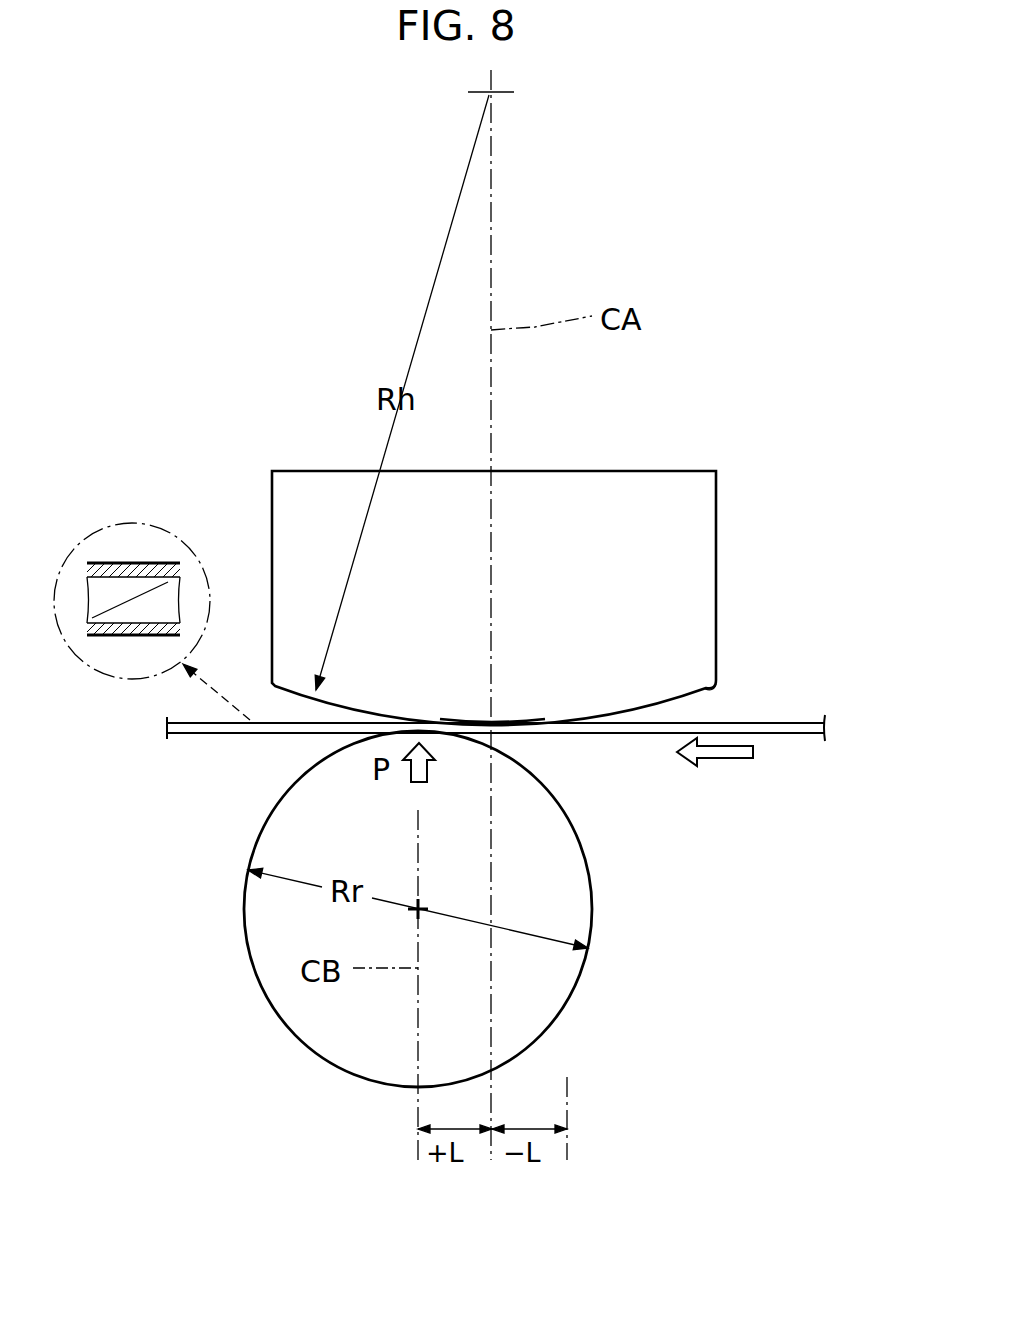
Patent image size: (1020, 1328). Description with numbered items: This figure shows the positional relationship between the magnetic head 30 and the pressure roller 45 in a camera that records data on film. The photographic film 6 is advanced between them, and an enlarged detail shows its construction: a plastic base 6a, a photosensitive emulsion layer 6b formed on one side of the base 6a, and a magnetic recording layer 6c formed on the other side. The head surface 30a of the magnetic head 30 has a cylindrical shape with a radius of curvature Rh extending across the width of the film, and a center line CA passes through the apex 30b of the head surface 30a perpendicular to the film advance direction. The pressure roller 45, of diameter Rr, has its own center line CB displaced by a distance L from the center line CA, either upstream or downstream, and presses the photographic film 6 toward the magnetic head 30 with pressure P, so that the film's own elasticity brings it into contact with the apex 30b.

The magnetic head 30 is at (672, 468).
The head surface 30a is at (692, 694).
The apex 30b is at (496, 720).
The photographic film 6 is at (780, 721).
The plastic base 6a is at (158, 598).
The photosensitive emulsion layer 6b is at (128, 636).
The magnetic recording layer 6c is at (128, 564).
The pressure roller 45 is at (593, 876).